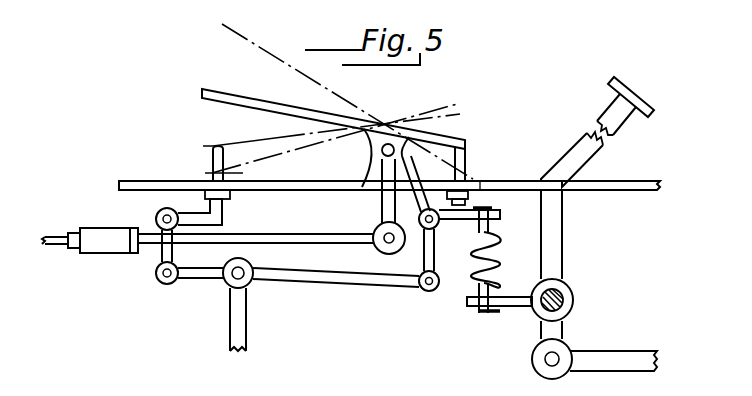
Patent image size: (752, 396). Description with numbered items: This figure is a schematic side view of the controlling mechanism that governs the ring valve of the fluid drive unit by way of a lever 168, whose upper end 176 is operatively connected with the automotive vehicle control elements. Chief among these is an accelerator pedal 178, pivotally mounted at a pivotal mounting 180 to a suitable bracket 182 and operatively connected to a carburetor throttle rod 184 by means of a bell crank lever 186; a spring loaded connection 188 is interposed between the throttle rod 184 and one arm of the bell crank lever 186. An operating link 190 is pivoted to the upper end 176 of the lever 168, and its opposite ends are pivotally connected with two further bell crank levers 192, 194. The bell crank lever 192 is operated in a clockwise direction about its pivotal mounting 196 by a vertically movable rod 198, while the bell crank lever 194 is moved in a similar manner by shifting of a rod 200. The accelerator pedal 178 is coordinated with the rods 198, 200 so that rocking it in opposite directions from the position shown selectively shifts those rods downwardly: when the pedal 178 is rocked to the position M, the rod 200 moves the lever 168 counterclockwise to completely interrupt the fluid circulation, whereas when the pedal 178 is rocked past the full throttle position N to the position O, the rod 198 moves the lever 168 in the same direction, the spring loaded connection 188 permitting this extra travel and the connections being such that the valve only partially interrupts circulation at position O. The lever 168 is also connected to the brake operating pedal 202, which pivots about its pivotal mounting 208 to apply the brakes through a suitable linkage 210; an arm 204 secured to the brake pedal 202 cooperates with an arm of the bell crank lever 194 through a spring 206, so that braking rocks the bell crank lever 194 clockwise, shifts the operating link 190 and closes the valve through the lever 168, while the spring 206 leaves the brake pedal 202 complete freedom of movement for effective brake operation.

The position M is at (333, 95).
The full throttle position N is at (322, 147).
The position O is at (323, 143).
The lever 168 is at (247, 313).
The upper end of lever 176 is at (226, 285).
The accelerator pedal 178 is at (262, 96).
The pivotal mounting 180 is at (382, 151).
The bracket 182 is at (375, 178).
The carburetor throttle rod 184 is at (68, 232).
The bell crank lever 186 is at (377, 228).
The spring loaded connection 188 is at (100, 248).
The operating link 190 is at (351, 274).
The bell crank lever 192 is at (157, 218).
The bell crank lever 194 is at (419, 231).
The pivotal mounting 196 is at (184, 226).
The vertically movable rod 198 is at (239, 173).
The rod 200 is at (467, 158).
The brake operating pedal 202 is at (569, 151).
The arm 204 is at (515, 305).
The spring 206 is at (474, 272).
The pivotal mounting 208 is at (574, 300).
The linkage 210 is at (600, 370).